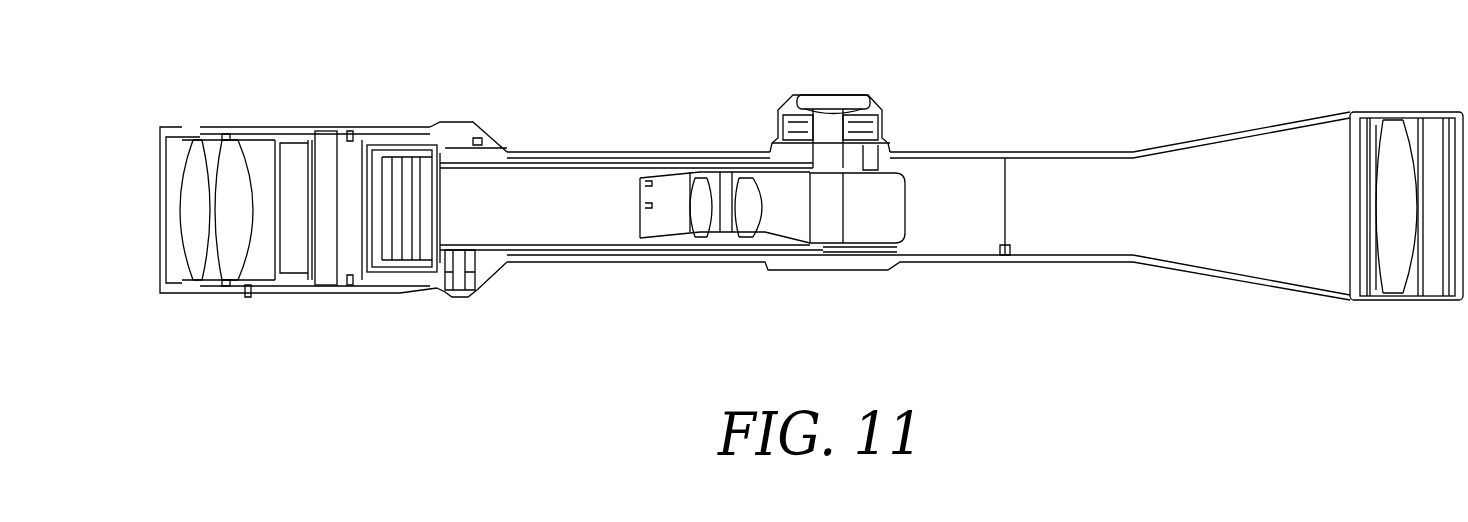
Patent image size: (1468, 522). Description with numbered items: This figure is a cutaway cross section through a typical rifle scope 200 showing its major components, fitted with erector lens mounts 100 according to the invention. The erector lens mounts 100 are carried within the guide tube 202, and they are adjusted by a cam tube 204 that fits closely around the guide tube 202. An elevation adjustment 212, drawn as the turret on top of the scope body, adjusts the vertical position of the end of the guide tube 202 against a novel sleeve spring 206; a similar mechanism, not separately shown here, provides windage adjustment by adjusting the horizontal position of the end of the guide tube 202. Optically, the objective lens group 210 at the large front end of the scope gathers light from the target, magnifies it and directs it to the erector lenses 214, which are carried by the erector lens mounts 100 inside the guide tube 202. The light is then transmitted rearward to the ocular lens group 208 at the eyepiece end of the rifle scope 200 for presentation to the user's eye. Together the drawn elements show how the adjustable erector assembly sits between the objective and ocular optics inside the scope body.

The erector lens mounts 100 is at (660, 235).
The rifle scope 200 is at (990, 152).
The guide tube 202 is at (443, 262).
The cam tube 204 is at (507, 262).
The sleeve spring 206 is at (1008, 218).
The ocular lens group 208 is at (182, 312).
The objective lens group 210 is at (1442, 307).
The elevation adjustment 212 is at (790, 100).
The erector lenses 214 is at (700, 225).